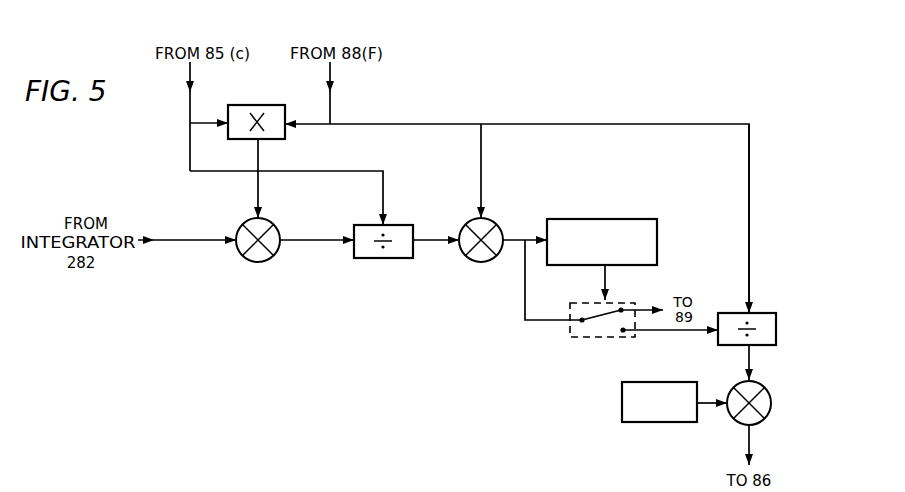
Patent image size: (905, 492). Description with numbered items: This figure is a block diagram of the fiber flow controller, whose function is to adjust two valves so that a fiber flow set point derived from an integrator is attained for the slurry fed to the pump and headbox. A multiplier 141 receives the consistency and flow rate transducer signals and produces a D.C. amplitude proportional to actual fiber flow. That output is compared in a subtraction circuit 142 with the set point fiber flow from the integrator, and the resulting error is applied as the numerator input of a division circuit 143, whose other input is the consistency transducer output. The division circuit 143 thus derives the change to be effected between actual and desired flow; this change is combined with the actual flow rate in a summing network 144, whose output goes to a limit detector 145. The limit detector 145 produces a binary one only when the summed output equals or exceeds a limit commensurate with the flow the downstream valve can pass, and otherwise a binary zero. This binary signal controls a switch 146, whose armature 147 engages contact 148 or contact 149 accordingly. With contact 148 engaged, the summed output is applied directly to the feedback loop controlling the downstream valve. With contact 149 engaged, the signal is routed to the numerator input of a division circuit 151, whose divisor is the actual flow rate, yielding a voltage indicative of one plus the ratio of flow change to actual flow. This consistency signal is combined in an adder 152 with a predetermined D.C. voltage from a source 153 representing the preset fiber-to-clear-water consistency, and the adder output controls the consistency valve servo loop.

The multiplier 141 is at (262, 105).
The subtraction circuit 142 is at (268, 259).
The division circuit 143 is at (395, 258).
The summing network 144 is at (483, 262).
The limit detector 145 is at (635, 219).
The switch 146 is at (603, 340).
The switch armature 147 is at (592, 305).
The contact 148 is at (623, 306).
The contact 149 is at (625, 336).
The division circuit 151 is at (777, 328).
The adder 152 is at (772, 400).
The source 153 is at (633, 422).